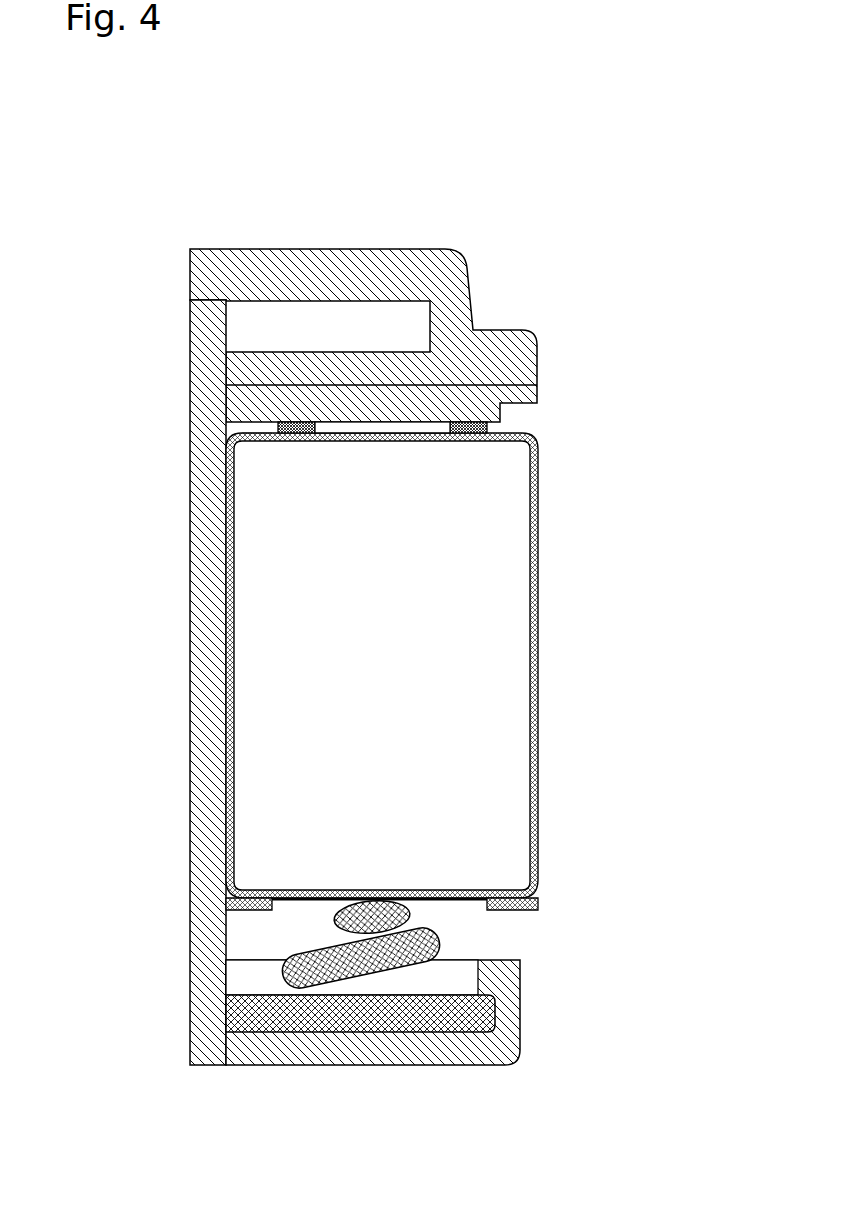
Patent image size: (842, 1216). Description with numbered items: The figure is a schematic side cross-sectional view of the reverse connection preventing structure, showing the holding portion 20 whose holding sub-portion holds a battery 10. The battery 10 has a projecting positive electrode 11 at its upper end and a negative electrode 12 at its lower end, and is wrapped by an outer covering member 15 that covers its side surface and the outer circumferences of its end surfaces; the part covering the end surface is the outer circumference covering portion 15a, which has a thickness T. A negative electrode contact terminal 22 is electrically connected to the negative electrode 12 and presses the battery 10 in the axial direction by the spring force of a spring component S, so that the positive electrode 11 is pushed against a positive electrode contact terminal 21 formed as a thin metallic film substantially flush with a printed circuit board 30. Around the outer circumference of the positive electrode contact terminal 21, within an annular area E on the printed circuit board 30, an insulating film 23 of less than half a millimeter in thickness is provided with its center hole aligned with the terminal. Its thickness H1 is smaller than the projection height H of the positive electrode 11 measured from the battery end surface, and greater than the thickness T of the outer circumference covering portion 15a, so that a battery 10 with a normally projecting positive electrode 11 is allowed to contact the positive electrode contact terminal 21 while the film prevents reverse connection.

The battery 10 is at (385, 671).
The positive electrode 11 is at (390, 430).
The negative electrode 12 is at (448, 905).
The outer covering member 15 is at (540, 688).
The outer circumference covering portion 15a is at (260, 437).
The lower housing 20 is at (552, 918).
The positive electrode contact terminal 21 is at (413, 428).
The negative electrode contact terminal 22 is at (375, 896).
The insulating film 23 is at (290, 436).
The printed circuit board 30 is at (190, 391).
The annular area E is at (298, 420).
The spring component S is at (323, 953).
The thickness of outer circumference covering portion T is at (162, 429).
The projection height of positive electrode H is at (602, 402).
The thickness of insulating film H1 is at (560, 458).